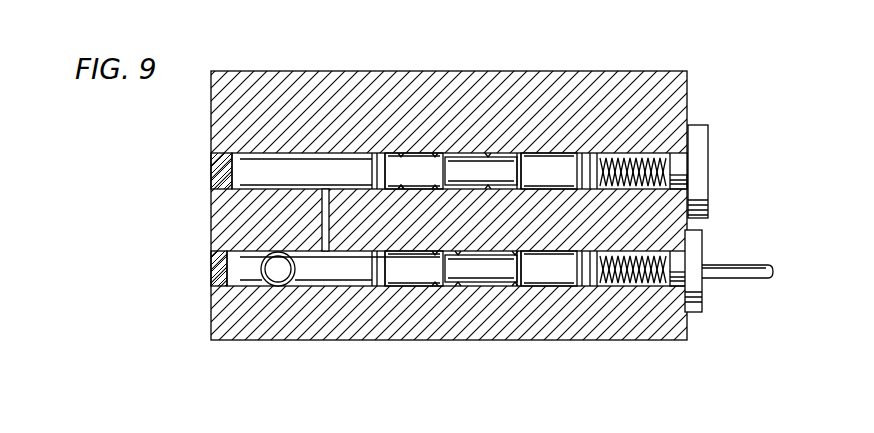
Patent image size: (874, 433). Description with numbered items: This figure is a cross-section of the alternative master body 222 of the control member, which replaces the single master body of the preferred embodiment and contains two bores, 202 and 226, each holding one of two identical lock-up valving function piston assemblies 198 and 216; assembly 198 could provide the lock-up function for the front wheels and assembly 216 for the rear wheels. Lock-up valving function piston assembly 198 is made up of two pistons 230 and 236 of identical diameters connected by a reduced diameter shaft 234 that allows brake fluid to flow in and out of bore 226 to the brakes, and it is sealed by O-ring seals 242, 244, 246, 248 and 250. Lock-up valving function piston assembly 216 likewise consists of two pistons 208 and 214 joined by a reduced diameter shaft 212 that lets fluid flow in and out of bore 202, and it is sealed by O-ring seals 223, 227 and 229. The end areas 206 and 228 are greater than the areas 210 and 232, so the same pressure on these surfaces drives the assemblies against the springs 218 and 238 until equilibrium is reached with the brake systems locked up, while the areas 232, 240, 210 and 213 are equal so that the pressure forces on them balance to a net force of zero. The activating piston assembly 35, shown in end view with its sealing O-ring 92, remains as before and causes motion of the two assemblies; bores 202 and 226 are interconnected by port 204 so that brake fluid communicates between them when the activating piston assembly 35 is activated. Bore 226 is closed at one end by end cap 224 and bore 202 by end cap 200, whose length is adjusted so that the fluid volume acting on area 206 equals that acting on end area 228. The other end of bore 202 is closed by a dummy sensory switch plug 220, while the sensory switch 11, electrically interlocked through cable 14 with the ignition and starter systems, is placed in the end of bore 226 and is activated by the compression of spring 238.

The sensory switch 11 is at (705, 232).
The cable 14 is at (752, 265).
The activating piston assembly 35 is at (282, 277).
The sealing O-ring 92 is at (260, 286).
The lock-up valving function piston assembly 198 is at (605, 290).
The end cap 200 is at (212, 185).
The bore 202 is at (250, 158).
The port 204 is at (322, 218).
The end area 206 is at (356, 153).
The piston 208 is at (415, 152).
The area 210 is at (473, 153).
The reduced diameter shaft 212 is at (496, 153).
The area 213 is at (522, 153).
The piston 214 is at (562, 153).
The lock-up valving function piston assembly 216 is at (615, 153).
The spring 218 is at (630, 155).
The dummy sensory switch plug 220 is at (708, 140).
The alternative master body 222 is at (688, 73).
The O-ring seal 223 is at (403, 152).
The end cap 224 is at (208, 280).
The bore 226 is at (235, 262).
The O-ring seal 227 is at (400, 192).
The end area 228 is at (368, 290).
The O-ring seal 229 is at (435, 152).
The piston 230 is at (488, 152).
The area 232 is at (455, 249).
The reduced diameter shaft 234 is at (498, 290).
The piston 236 is at (562, 290).
The spring 238 is at (650, 290).
The area 240 is at (515, 250).
The O-ring seal 242 is at (391, 290).
The O-ring seal 244 is at (398, 290).
The O-ring seal 246 is at (448, 228).
The O-ring seal 248 is at (483, 290).
The O-ring seal 250 is at (573, 290).